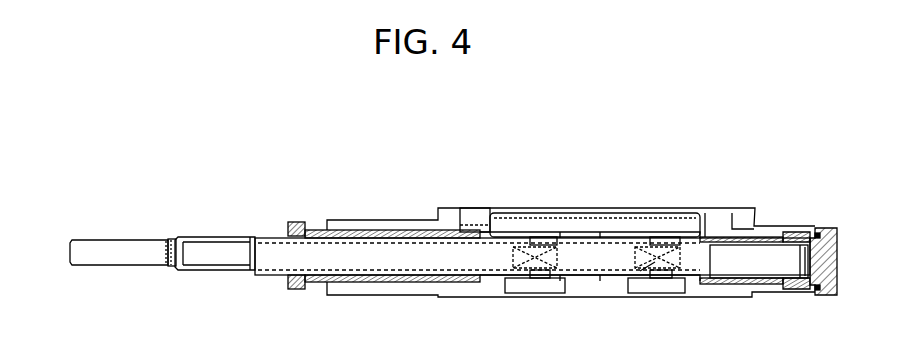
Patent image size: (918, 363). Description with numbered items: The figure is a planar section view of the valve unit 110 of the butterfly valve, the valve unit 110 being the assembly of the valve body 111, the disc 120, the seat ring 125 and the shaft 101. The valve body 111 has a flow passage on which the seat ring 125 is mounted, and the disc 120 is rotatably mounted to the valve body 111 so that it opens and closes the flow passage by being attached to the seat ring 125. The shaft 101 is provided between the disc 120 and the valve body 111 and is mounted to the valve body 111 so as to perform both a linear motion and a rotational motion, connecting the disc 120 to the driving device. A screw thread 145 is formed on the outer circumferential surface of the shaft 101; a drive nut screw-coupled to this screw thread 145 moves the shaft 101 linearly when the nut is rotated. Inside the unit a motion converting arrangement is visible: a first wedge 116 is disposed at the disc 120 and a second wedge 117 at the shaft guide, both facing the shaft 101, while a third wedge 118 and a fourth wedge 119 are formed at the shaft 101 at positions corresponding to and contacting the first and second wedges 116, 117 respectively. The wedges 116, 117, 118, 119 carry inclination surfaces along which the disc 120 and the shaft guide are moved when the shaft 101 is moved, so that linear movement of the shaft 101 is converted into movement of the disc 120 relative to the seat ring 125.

The valve unit 110 is at (571, 242).
The valve body 111 is at (387, 221).
The disc 120 is at (512, 220).
The seat ring 125 is at (475, 215).
The first wedge 116 is at (660, 237).
The fourth wedge 119 is at (640, 272).
The second wedge 117 is at (655, 278).
The third wedge 118 is at (640, 252).
The shaft 101 is at (307, 262).
The screw thread 145 is at (212, 270).